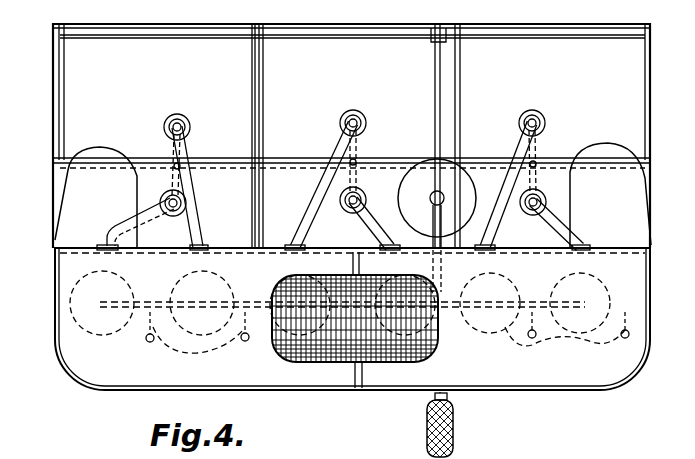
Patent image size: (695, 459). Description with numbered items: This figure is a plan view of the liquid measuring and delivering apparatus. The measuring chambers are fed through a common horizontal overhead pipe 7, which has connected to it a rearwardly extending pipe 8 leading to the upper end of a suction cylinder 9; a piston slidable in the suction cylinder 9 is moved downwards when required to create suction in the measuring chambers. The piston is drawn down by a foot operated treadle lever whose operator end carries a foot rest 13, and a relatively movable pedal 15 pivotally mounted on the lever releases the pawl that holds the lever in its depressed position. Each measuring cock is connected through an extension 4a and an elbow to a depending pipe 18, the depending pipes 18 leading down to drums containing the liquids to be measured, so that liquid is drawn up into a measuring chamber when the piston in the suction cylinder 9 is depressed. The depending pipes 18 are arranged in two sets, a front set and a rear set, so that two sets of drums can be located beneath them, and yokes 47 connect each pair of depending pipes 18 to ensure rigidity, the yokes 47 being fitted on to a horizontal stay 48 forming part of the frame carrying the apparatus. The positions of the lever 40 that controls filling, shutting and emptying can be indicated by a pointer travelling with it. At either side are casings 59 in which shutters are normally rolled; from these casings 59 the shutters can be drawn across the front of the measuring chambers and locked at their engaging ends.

The extension 4a is at (156, 203).
The common horizontal overhead pipe 7 is at (220, 292).
The shaft 8 is at (441, 270).
The suction cylinder 9 is at (479, 163).
The foot rest 13 is at (453, 428).
The pedal 15 is at (453, 408).
The depending pipe 18 is at (190, 127).
The lever 40 is at (349, 314).
The yoke 47 is at (188, 149).
The horizontal stay 48 is at (145, 160).
The casing 59 is at (70, 210).